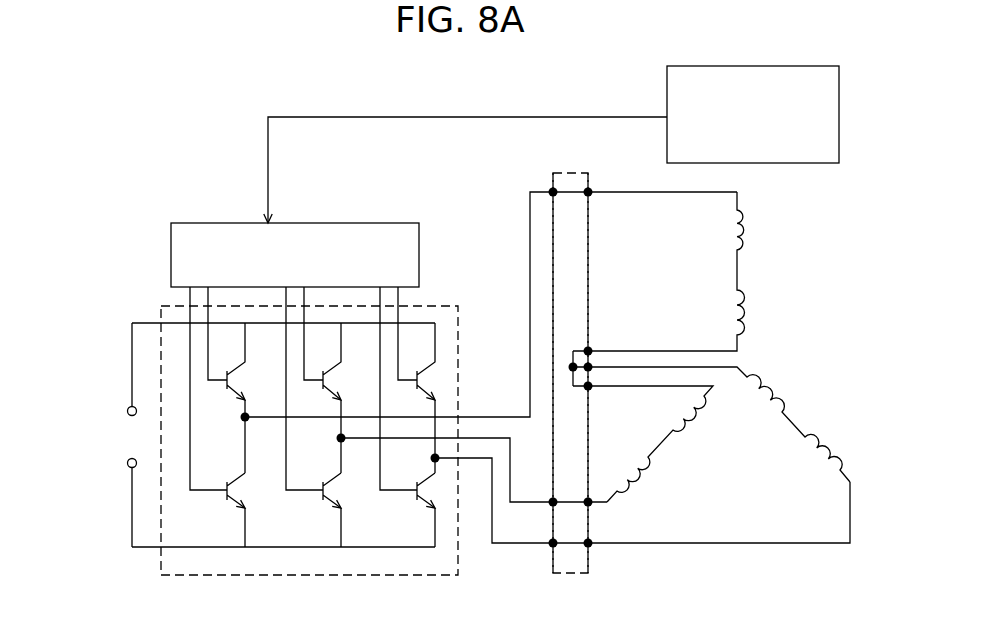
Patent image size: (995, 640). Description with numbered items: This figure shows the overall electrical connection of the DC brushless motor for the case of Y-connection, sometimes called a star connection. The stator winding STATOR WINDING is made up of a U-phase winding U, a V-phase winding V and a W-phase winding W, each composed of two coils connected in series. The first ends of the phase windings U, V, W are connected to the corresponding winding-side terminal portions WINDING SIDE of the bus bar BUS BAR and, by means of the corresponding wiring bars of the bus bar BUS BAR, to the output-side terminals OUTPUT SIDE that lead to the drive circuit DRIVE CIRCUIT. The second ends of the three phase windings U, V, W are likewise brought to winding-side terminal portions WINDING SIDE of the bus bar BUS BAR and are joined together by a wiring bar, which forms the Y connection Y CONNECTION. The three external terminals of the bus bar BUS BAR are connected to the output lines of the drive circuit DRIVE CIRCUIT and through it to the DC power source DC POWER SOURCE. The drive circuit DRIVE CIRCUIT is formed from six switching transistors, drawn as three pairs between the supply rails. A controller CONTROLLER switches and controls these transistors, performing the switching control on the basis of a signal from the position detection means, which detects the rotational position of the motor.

The controller CONTROLLER is at (295, 356).
The drive circuit DRIVE CIRCUIT is at (295, 458).
The DC power source DC POWER SOURCE is at (80, 435).
The bus bar BUS BAR is at (578, 357).
The stator winding STATOR WINDING is at (722, 347).
The U-phase winding U is at (673, 271).
The V-phase winding V is at (643, 444).
The W-phase winding W is at (711, 424).
The Y-connection Y CONNECTION is at (647, 318).
The output-side terminals OUTPUT SIDE is at (540, 553).
The winding-side terminal portions WINDING SIDE is at (596, 559).